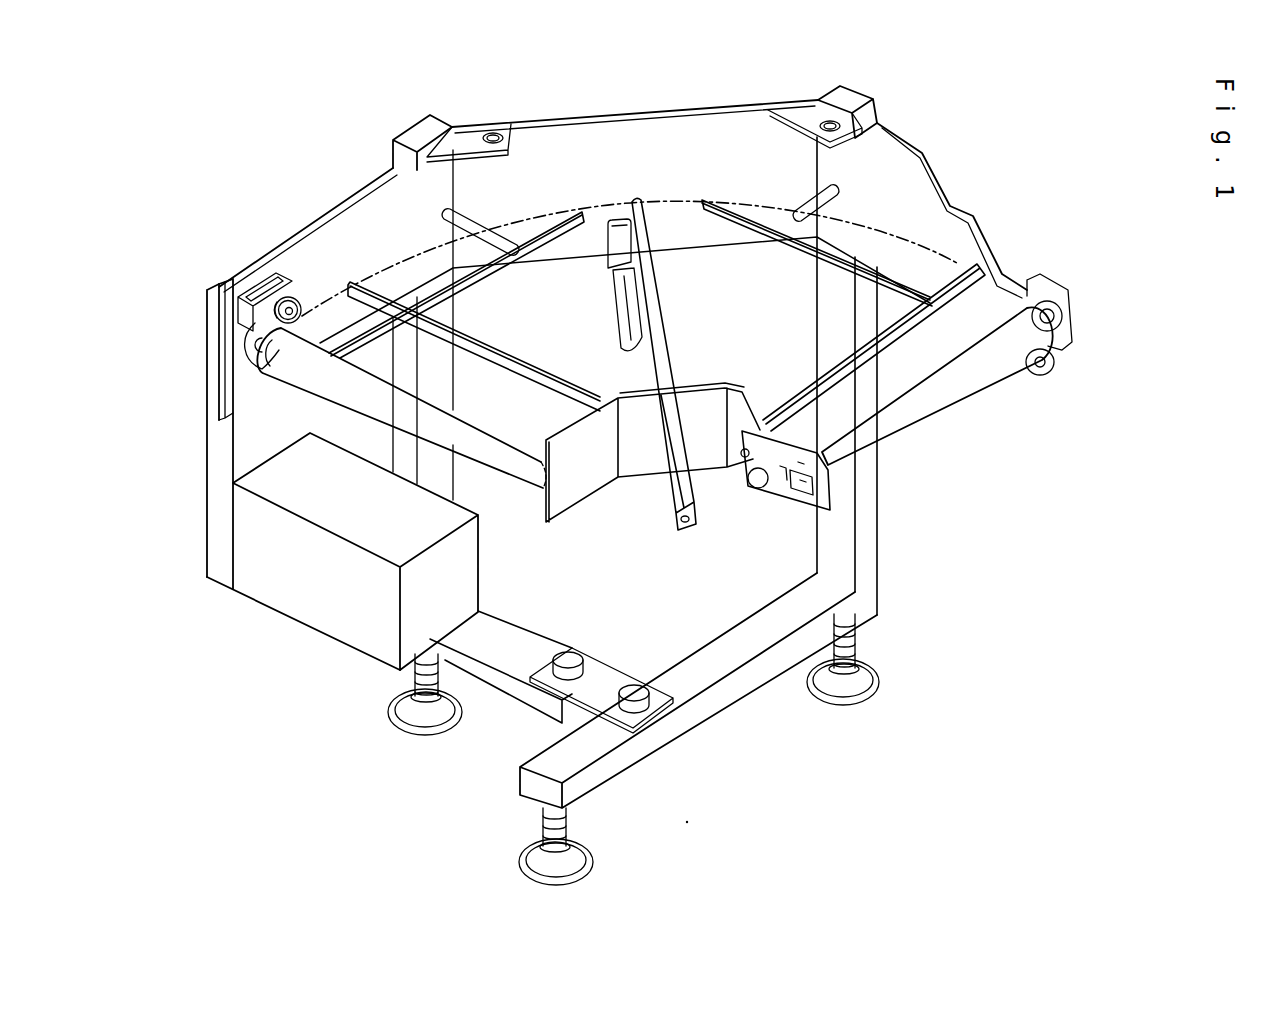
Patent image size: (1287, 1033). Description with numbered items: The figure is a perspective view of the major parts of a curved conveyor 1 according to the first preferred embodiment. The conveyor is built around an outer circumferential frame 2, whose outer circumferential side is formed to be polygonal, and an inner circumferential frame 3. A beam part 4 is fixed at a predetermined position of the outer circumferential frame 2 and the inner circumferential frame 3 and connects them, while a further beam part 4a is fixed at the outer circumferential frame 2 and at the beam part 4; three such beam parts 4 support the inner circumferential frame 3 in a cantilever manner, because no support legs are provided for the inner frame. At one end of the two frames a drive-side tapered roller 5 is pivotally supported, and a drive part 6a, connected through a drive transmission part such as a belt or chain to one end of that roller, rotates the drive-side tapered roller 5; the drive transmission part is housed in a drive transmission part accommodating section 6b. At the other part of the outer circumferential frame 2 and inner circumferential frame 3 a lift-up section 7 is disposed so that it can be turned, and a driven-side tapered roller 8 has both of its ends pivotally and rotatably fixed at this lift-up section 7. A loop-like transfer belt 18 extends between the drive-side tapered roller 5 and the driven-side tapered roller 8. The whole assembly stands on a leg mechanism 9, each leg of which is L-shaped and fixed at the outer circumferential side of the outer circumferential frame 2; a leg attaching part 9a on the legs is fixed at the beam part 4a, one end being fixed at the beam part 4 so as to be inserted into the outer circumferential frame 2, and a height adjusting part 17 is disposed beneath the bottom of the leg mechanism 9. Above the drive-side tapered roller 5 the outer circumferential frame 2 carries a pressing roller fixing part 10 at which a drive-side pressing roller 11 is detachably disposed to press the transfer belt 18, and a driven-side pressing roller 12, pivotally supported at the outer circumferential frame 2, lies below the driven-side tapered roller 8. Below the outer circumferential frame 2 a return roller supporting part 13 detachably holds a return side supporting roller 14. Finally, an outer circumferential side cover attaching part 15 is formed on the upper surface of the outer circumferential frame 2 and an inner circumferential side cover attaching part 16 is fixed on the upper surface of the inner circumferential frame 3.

The curved conveyor 1 is at (270, 140).
The outer circumferential frame 2 is at (632, 153).
The inner circumferential frame 3 is at (640, 458).
The beam part 4 is at (653, 325).
The beam part 4a is at (490, 274).
The drive-side tapered roller 5 is at (497, 458).
The drive part 6a is at (290, 590).
The drive transmission part accommodating section 6b is at (218, 562).
The lift-up section 7 is at (963, 400).
The driven-side tapered roller 8 is at (902, 410).
The leg mechanism 9 is at (867, 522).
The leg attaching part 9a is at (447, 216).
The pressing roller fixing part 10 is at (240, 300).
The drive-side pressing roller 11 is at (293, 303).
The driven-side pressing roller 12 is at (1043, 377).
The return roller supporting part 13 is at (608, 265).
The return side supporting roller 14 is at (627, 305).
The outer circumferential side cover attaching part 15 is at (493, 133).
The inner circumferential side cover attaching part 16 is at (690, 522).
The height adjusting part 17 is at (408, 713).
The transfer belt 18 is at (928, 247).